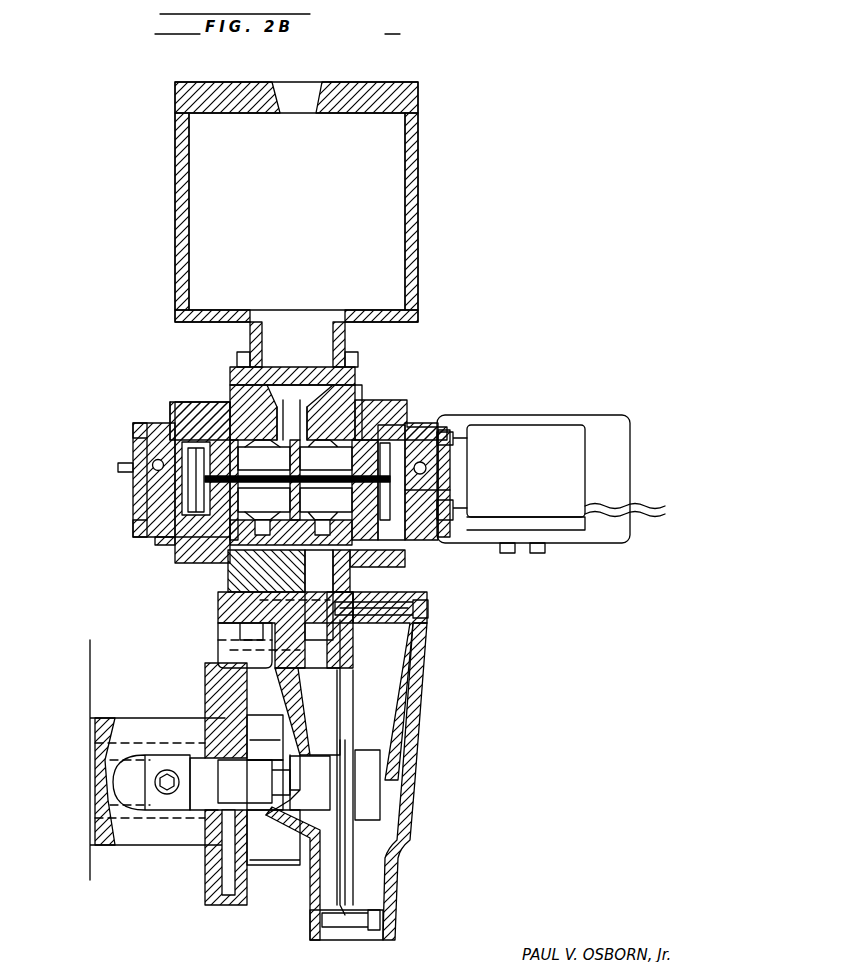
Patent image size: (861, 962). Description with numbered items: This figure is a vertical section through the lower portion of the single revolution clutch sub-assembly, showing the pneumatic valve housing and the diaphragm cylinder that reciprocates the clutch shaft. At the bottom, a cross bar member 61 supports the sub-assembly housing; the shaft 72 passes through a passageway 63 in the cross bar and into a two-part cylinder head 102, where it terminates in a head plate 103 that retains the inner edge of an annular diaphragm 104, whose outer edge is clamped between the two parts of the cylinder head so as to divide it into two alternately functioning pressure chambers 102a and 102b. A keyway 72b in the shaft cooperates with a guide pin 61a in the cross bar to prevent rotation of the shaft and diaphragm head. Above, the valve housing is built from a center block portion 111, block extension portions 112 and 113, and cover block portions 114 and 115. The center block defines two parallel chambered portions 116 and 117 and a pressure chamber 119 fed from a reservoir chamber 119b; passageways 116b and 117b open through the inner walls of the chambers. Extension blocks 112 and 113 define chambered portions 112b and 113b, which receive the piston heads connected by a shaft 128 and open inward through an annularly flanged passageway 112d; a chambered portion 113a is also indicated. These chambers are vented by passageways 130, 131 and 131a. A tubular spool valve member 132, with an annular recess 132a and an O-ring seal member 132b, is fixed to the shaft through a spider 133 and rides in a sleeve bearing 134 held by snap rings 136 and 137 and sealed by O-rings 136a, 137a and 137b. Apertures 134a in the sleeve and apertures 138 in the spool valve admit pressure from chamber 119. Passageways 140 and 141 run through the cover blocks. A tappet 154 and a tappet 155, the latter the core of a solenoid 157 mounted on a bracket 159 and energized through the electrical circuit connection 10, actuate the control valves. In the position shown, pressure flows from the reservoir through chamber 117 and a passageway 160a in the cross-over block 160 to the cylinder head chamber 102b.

The electrical circuit connection 10 is at (658, 505).
The cross bar member 61 is at (210, 880).
The guide pin 61a is at (220, 837).
The passageway 63 is at (249, 758).
The shaft 72 is at (262, 805).
The keyway 72b is at (254, 781).
The cylinder head 102 is at (413, 763).
The pressure chamber 102a is at (315, 702).
The pressure chamber 102b is at (387, 707).
The head plate 103 is at (348, 873).
The annular diaphragm 104 is at (348, 865).
The center block portion 111 is at (255, 430).
The block extension portion 112 is at (150, 420).
The chambered portion 112b is at (167, 510).
The annularly flanged passageway 112d is at (177, 412).
The block extension portion 113 is at (410, 407).
The chambered portion 113a is at (373, 440).
The chambered portion 113b is at (437, 490).
The cover block portion 114 is at (205, 540).
The cover block portion 115 is at (423, 440).
The chambered portion 116 is at (227, 420).
The passageway 116b is at (210, 565).
The chambered portion 117 is at (357, 440).
The passageway 117b is at (400, 568).
The pressure chamber 119 is at (297, 430).
The reservoir chamber 119b is at (418, 184).
The shaft 128 is at (264, 462).
The passageway 130 is at (258, 527).
The passageway 131 is at (388, 522).
The passageway 131a is at (405, 535).
The spool valve member 132 is at (264, 500).
The annular recess 132a is at (105, 549).
The O-ring seal member 132b is at (326, 502).
The spider 133 is at (302, 427).
The sleeve bearing 134 is at (213, 413).
The apertures 134a is at (285, 430).
The snap ring 136 is at (250, 440).
The O-ring 136a is at (262, 352).
The snap ring 137 is at (330, 435).
The O-ring 137a is at (320, 428).
The O-ring 137b is at (326, 455).
The apertures 138 is at (263, 452).
The passageway 140 is at (152, 464).
The passageway 141 is at (426, 466).
The tappet 154 is at (117, 472).
The tappet 155 is at (458, 468).
The solenoid 157 is at (543, 447).
The bracket 159 is at (575, 547).
The cross-over block 160 is at (242, 572).
The passageway 160a is at (322, 577).